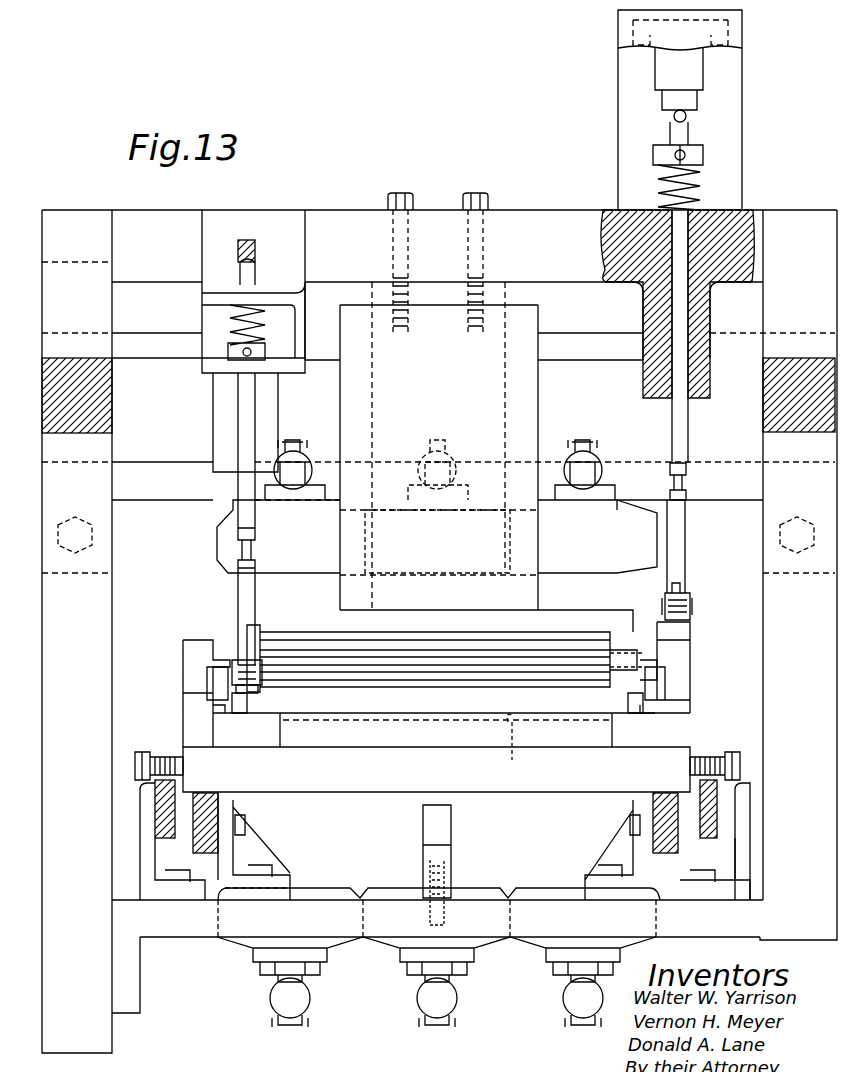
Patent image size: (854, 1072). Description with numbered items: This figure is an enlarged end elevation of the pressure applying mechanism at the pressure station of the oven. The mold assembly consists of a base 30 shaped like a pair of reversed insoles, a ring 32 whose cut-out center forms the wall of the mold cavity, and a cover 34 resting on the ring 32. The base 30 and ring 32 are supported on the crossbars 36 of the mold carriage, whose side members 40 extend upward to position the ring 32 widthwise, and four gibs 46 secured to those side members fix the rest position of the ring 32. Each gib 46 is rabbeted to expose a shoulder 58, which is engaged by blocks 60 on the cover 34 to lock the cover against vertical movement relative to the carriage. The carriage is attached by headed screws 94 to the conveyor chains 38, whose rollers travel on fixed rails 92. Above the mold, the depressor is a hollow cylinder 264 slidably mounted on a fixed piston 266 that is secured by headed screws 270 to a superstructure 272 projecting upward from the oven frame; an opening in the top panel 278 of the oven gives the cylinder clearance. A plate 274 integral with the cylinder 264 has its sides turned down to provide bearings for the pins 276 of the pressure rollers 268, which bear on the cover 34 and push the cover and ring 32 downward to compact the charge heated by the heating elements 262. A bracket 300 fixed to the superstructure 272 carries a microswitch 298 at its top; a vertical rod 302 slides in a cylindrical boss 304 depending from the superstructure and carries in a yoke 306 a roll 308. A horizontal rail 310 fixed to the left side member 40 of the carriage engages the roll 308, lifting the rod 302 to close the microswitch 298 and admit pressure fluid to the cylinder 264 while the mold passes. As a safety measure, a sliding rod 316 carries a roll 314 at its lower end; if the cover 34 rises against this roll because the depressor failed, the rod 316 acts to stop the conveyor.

The superstructure 272 is at (338, 220).
The headed screws 270 is at (475, 200).
The microswitch 298 is at (663, 70).
The vertical rod 302 is at (686, 133).
The bracket 300 is at (640, 128).
The fixed piston 266 is at (500, 303).
The cylindrical boss 304 is at (745, 357).
The hollow cylinder 264 is at (533, 405).
The top panel 278 is at (155, 350).
The sliding rod 316 is at (245, 483).
The heating elements 262 is at (228, 540).
The roll 308 is at (682, 600).
The horizontal rail 310 is at (663, 628).
The yoke 306 is at (690, 605).
The pins 276 is at (243, 660).
The plate 274 is at (382, 625).
The pressure rollers 268 is at (445, 648).
The roll 314 is at (246, 656).
The gibs 46 is at (213, 677).
The chains 38 is at (139, 743).
The side members 40 is at (190, 696).
The blocks 60 is at (240, 705).
The shoulder 58 is at (215, 715).
The headed screws 94 is at (140, 763).
The fixed rails 92 is at (157, 812).
The crossbars 36 is at (312, 803).
The cover 34 is at (418, 700).
The base 30 is at (514, 750).
The ring 32 is at (610, 730).